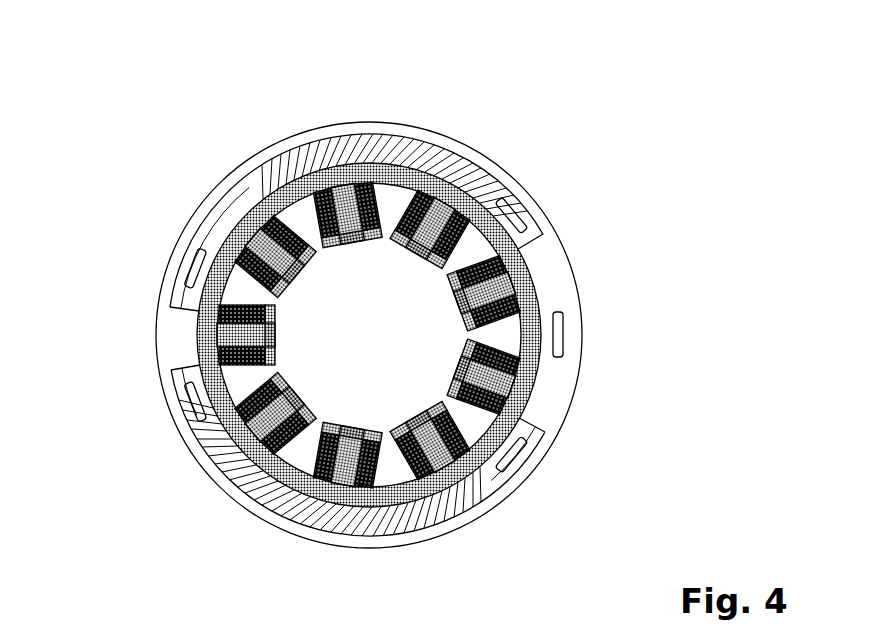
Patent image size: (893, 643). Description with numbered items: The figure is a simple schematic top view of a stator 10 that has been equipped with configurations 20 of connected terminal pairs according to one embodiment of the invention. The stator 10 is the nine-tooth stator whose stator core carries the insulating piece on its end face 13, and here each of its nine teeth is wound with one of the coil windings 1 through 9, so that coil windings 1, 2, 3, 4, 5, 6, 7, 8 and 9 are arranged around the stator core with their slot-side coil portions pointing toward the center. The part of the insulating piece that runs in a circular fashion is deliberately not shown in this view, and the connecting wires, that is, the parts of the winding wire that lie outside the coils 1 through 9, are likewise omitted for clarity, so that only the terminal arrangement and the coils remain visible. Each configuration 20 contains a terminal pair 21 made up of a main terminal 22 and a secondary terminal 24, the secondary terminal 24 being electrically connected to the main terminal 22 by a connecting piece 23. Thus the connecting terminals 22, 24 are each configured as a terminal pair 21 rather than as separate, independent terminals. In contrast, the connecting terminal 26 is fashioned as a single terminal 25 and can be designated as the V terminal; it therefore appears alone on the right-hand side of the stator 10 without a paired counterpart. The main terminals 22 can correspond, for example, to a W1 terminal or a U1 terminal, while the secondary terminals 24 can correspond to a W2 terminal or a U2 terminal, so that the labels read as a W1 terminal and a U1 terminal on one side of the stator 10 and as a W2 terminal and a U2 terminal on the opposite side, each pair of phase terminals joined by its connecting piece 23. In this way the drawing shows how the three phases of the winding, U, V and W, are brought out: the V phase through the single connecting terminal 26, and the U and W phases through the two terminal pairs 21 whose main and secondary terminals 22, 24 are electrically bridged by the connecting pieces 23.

The coil winding 1 is at (462, 367).
The coil winding 2 is at (457, 298).
The coil winding 3 is at (418, 256).
The coil winding 4 is at (355, 243).
The coil winding 5 is at (300, 277).
The coil winding 6 is at (277, 337).
The coil winding 7 is at (303, 397).
The coil winding 8 is at (357, 430).
The coil winding 9 is at (417, 420).
The stator 10 is at (367, 331).
The end face 13 is at (212, 198).
The configuration 20 is at (413, 128).
The terminal pair 21 is at (183, 440).
The main terminal 22 is at (572, 331).
The connecting piece 23 is at (282, 172).
The secondary terminal 24 is at (126, 340).
The single terminal 25 is at (367, 331).
The connecting terminal 26 is at (621, 334).
The U1 terminal U1 is at (525, 462).
The U2 terminal U2 is at (183, 403).
The V terminal V is at (565, 335).
The W1 terminal W1 is at (520, 212).
The W2 terminal W2 is at (188, 268).